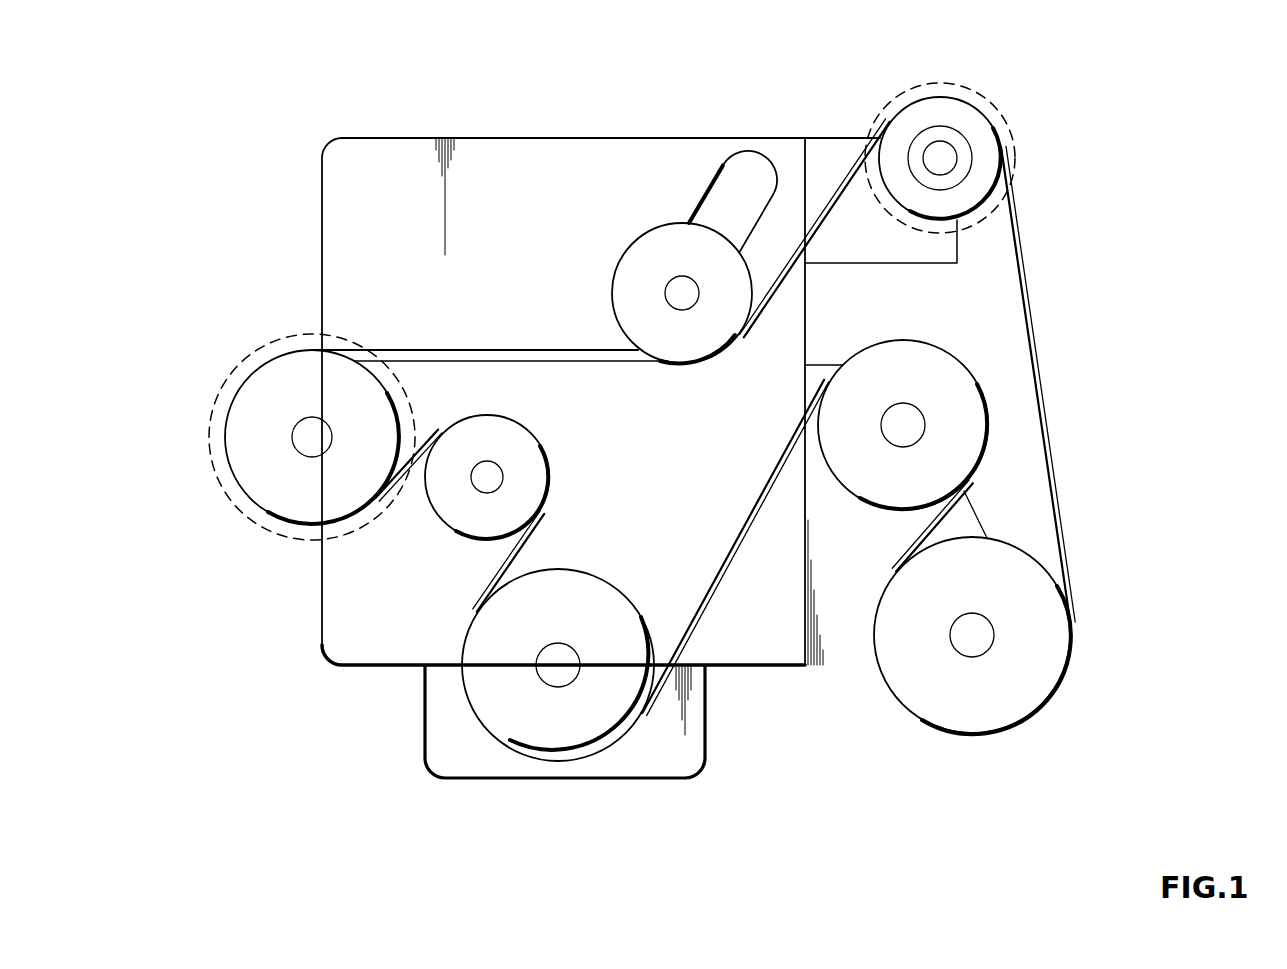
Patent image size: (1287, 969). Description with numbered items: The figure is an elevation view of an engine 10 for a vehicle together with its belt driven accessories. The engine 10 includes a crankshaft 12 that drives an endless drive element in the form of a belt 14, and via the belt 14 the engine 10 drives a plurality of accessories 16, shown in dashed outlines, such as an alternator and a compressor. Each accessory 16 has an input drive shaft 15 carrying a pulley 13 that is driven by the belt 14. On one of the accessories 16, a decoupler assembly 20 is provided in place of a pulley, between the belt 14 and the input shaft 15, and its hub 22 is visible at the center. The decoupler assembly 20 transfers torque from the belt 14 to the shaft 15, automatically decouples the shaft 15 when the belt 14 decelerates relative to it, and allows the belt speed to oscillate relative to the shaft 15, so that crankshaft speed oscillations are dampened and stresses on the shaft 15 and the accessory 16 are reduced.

The engine 10 is at (288, 93).
The crankshaft 12 is at (557, 668).
The pulley 13 is at (228, 462).
The belt 14 is at (703, 614).
The input drive shaft 15 is at (303, 440).
The accessory 16 is at (252, 353).
The decoupler assembly 20 is at (950, 158).
The hub 22 is at (978, 188).